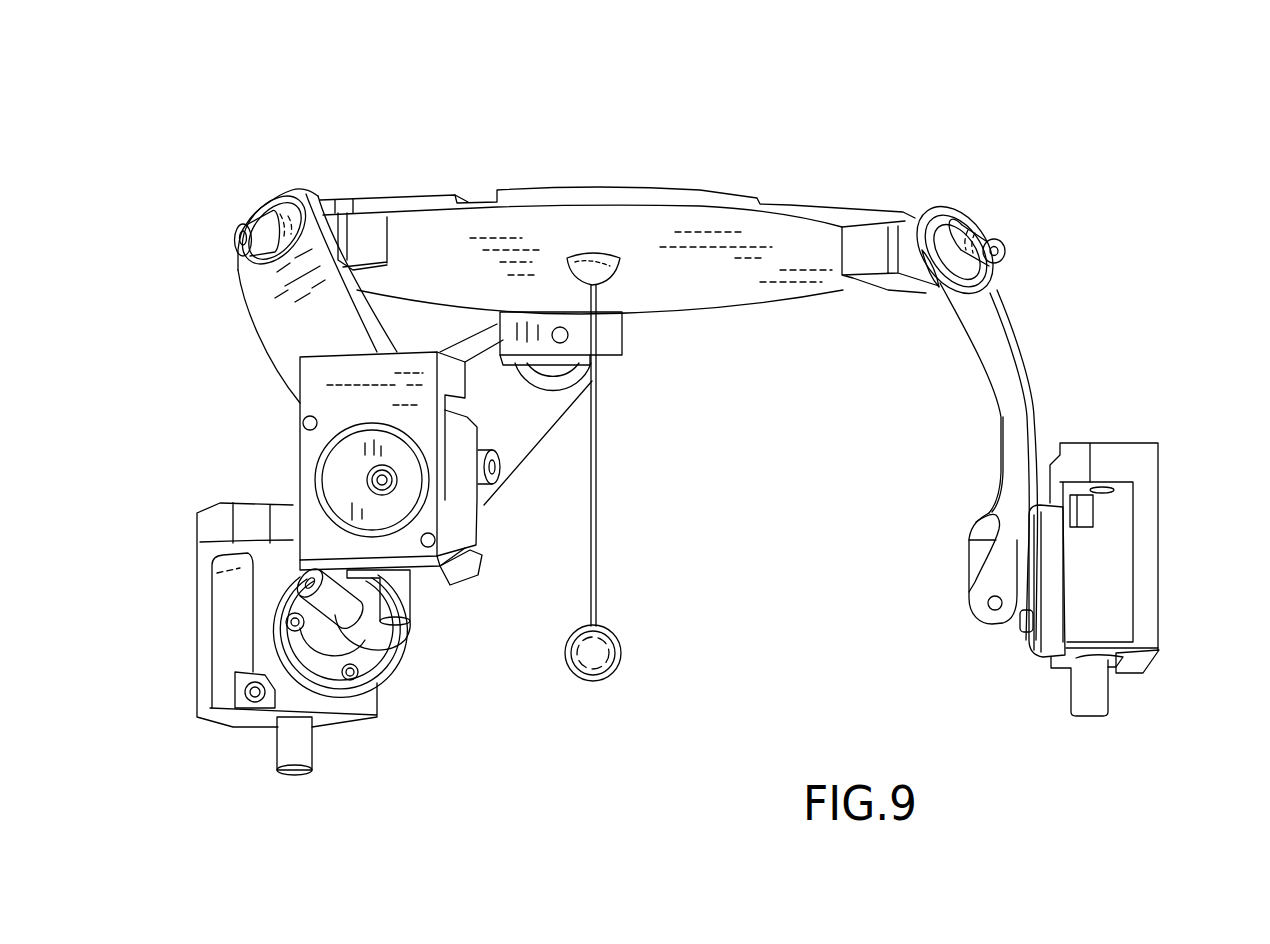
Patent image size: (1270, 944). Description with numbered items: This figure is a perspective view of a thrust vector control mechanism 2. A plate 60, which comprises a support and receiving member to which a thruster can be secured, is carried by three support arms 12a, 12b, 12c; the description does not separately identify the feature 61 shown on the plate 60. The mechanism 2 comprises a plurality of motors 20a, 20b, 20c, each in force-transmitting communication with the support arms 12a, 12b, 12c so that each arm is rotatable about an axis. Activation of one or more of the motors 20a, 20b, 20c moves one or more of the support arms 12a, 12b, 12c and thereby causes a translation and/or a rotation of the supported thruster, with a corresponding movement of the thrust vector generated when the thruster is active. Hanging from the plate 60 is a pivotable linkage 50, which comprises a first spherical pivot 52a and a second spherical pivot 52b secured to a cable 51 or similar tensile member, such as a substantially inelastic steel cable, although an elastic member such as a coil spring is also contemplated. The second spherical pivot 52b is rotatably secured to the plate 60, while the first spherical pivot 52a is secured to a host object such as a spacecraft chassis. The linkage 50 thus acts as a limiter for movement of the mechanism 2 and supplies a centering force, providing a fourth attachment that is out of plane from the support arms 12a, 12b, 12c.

The thrust vector control mechanism 2 is at (1097, 227).
The plate 60 is at (679, 150).
The headband rail 61 is at (435, 185).
The support arm 12a is at (266, 305).
The support arm 12b is at (541, 438).
The support arm 12c is at (1043, 377).
The motor 20a is at (300, 452).
The motor 20b is at (240, 743).
The motor 20c is at (1163, 579).
The pivotable linkage 50 is at (655, 511).
The cable 51 is at (609, 578).
The first spherical pivot 52a is at (632, 645).
The second spherical pivot 52b is at (621, 285).